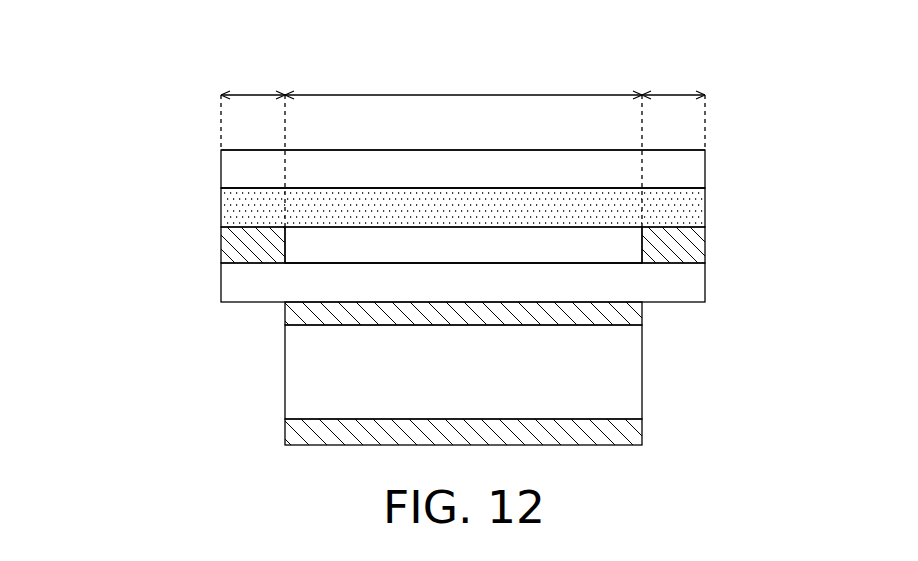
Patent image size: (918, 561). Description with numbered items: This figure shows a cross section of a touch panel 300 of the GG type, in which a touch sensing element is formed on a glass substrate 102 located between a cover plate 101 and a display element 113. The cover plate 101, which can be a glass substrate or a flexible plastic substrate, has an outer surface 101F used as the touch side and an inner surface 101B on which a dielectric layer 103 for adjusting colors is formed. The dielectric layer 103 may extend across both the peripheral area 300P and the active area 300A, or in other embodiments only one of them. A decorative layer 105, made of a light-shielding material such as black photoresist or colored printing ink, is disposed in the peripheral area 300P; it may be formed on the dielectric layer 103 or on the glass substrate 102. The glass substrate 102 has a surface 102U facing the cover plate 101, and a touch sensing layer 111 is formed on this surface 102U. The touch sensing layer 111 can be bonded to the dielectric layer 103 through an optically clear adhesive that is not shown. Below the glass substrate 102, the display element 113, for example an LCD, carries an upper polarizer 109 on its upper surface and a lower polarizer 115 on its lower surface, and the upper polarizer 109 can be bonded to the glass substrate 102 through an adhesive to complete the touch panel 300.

The touch panel 300 is at (435, 225).
The peripheral area 300P is at (463, 141).
The active area 300A is at (463, 77).
The cover plate 101 is at (698, 172).
The outer surface 101F is at (250, 149).
The inner surface 101B is at (248, 191).
The dielectric layer 103 is at (698, 210).
The decorative layer 105 is at (221, 235).
The touch sensing layer 111 is at (612, 250).
The glass substrate 102 is at (228, 283).
The surface 102U is at (327, 262).
The upper polarizer 109 is at (636, 316).
The display element 113 is at (634, 373).
The lower polarizer 115 is at (636, 430).